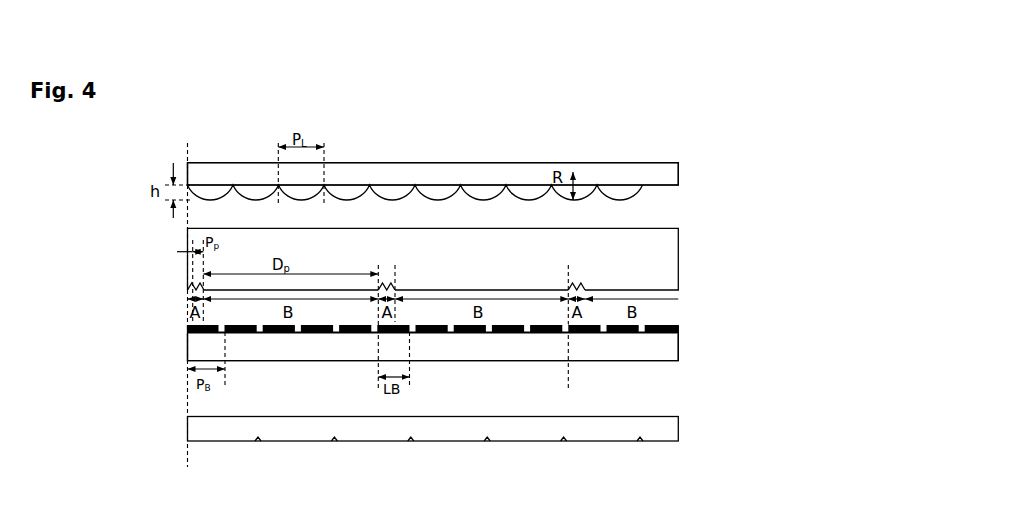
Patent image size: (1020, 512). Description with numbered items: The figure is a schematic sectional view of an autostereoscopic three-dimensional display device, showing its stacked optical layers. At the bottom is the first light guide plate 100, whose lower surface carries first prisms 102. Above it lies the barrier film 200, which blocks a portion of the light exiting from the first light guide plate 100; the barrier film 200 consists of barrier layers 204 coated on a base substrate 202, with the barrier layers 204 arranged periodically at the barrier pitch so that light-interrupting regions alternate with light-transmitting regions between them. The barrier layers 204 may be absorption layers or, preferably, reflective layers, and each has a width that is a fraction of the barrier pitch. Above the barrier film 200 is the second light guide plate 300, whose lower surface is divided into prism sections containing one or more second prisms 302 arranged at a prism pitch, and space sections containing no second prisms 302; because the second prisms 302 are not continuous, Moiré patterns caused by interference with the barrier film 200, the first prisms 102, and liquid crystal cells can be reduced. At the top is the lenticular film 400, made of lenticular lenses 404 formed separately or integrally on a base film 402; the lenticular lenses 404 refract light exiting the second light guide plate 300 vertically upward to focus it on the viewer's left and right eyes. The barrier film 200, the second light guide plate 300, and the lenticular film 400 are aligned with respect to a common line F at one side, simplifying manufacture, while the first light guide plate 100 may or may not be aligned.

The lenticular film 400 is at (680, 174).
The base film 402 is at (647, 168).
The lenticular lenses 404 is at (625, 193).
The second light guide plate 300 is at (680, 261).
The second prisms 302 is at (396, 286).
The barrier film 200 is at (680, 343).
The base substrate 202 is at (650, 355).
The barrier layers 204 is at (662, 323).
The first light guide plate 100 is at (680, 427).
The first prisms 102 is at (412, 441).
The line F is at (188, 454).